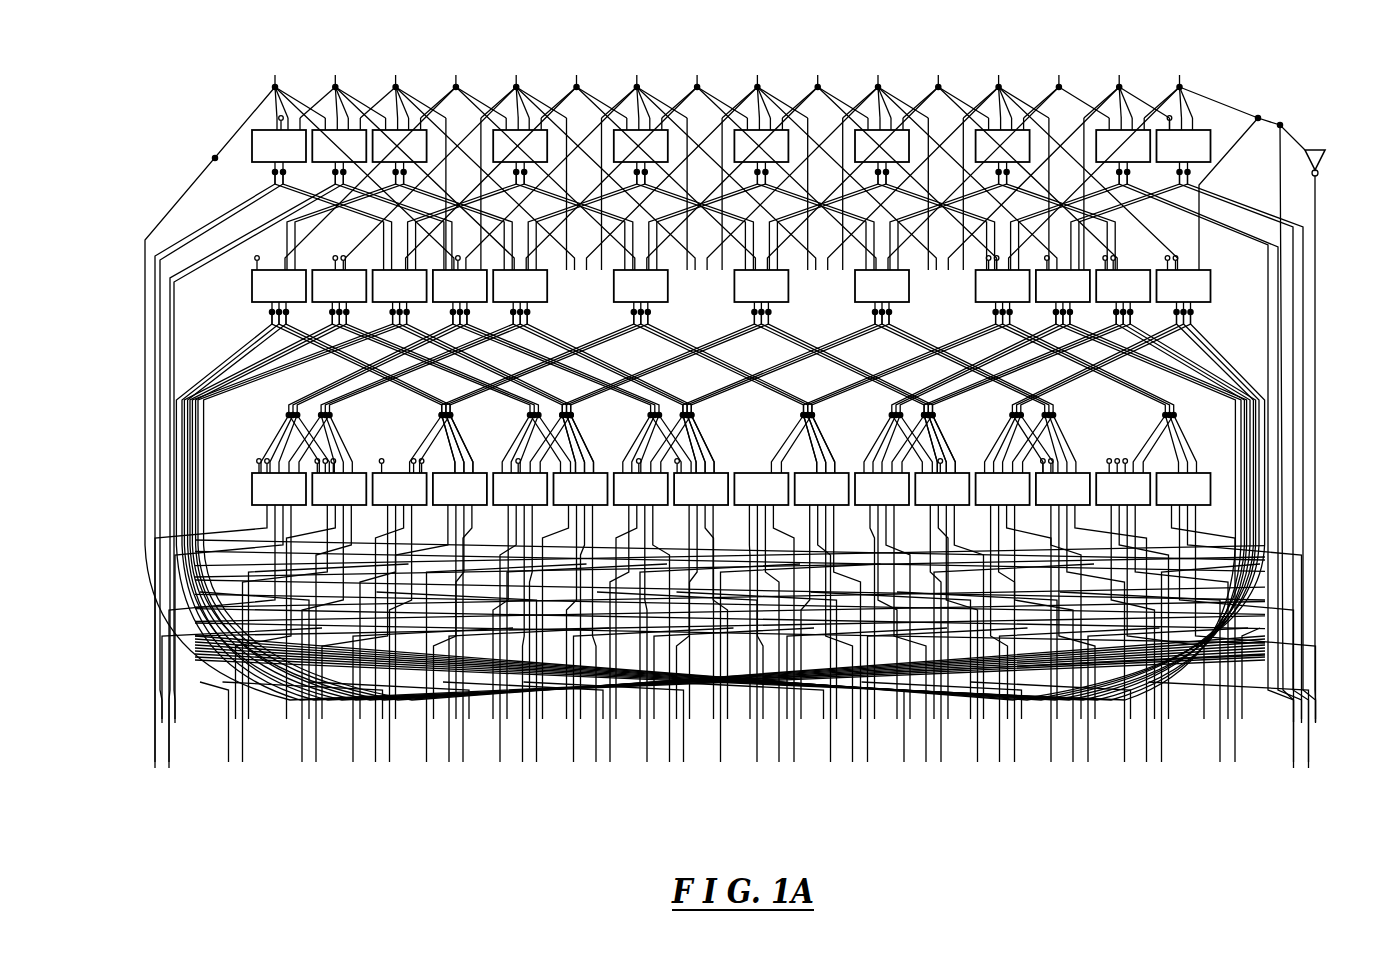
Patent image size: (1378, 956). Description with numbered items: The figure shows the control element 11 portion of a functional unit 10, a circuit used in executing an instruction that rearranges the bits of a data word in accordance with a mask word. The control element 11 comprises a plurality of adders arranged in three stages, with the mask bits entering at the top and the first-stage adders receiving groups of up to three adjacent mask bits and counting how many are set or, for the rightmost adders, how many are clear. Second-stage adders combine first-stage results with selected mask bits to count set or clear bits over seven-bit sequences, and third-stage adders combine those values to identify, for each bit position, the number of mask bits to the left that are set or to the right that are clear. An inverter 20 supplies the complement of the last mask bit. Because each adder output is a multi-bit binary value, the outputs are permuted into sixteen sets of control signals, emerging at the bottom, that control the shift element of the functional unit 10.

The functional unit 10 is at (1182, 886).
The control element 11 is at (349, 871).
The inverter 20 is at (1321, 172).